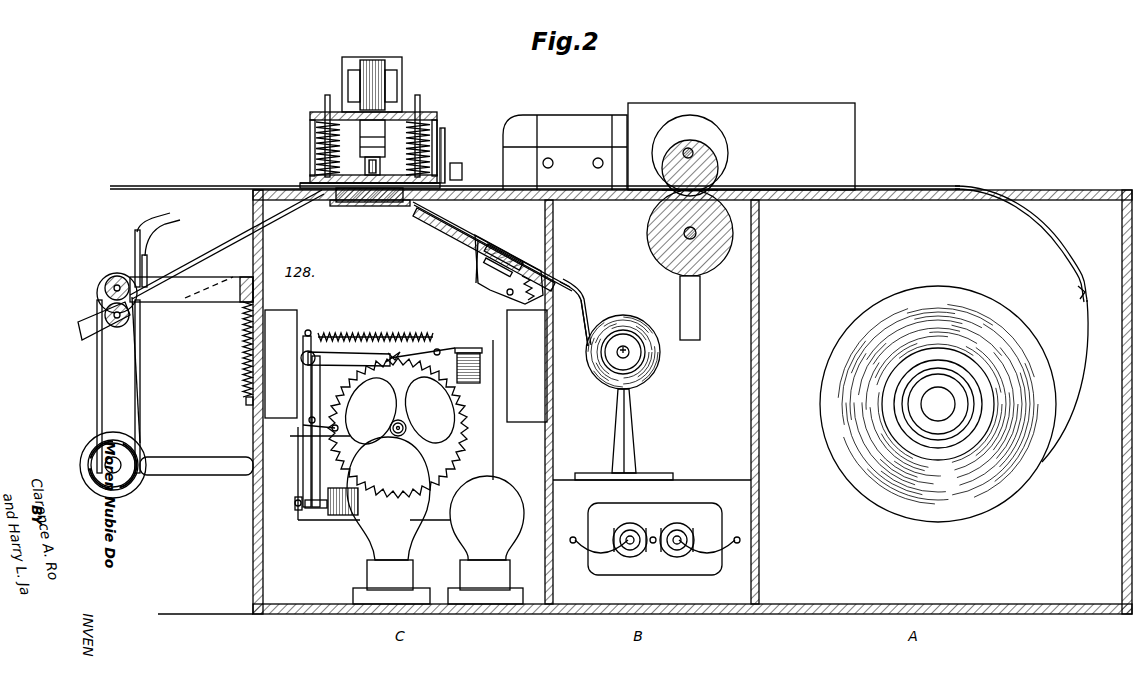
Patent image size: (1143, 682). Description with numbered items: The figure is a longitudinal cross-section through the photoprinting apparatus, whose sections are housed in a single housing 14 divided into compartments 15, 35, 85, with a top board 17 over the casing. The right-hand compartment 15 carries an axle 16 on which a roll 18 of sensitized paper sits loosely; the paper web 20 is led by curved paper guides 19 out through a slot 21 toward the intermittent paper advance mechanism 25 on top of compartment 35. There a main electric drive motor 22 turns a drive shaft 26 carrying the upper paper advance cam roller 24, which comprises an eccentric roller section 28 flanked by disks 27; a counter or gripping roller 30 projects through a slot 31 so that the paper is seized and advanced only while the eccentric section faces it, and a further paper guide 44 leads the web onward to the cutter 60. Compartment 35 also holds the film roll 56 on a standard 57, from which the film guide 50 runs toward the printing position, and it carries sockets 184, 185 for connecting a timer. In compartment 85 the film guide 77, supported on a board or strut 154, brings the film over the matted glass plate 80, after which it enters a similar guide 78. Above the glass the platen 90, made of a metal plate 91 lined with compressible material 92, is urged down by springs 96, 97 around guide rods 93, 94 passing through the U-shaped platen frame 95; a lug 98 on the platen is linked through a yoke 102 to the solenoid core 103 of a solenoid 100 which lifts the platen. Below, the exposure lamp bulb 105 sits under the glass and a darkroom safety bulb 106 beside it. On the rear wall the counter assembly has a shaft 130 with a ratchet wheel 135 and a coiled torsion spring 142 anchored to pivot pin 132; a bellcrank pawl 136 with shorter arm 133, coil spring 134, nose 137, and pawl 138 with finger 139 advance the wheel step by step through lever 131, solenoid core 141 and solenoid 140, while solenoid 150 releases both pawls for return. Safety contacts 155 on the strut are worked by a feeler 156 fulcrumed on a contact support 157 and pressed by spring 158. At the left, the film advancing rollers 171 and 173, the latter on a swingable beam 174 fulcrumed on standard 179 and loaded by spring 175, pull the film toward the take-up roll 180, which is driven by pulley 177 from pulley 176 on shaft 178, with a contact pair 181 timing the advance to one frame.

The housing 14 is at (1124, 473).
The compartment 15 is at (1066, 596).
The axle 16 is at (955, 402).
The top board 17 is at (783, 194).
The roll of sensitized paper 18 is at (913, 506).
The curved paper guides 19 is at (1054, 235).
The paper strip or web 20 is at (1088, 364).
The slot 21 is at (987, 193).
The main electric drive motor 22 is at (571, 124).
The upper paper advance cam roller 24 is at (736, 168).
The intermittent paper advance mechanism 25 is at (760, 98).
The drive shaft 26 is at (688, 150).
The disks 27 is at (710, 134).
The eccentric roller section 28 is at (716, 188).
The counter or gripping roller 30 is at (656, 249).
The slot 31 is at (672, 195).
The compartment 35 is at (752, 373).
The paper guide 44 is at (504, 186).
The film guide 50 is at (582, 298).
The film roll 56 is at (654, 374).
The standard 57 is at (629, 432).
The cutter 60 is at (463, 152).
The film guide 77 is at (480, 246).
The guide 78 is at (274, 216).
The glass plate 80 is at (372, 202).
The compartment 85 is at (538, 600).
The platen 90 is at (300, 179).
The metal plate 91 is at (317, 175).
The compressible lining 92 is at (310, 184).
The guide rod 93 is at (327, 98).
The guide rod 94 is at (421, 100).
The platen frame 95 is at (407, 112).
The spring 96 is at (320, 140).
The spring 97 is at (409, 137).
The lug 98 is at (376, 163).
The solenoid 100 is at (374, 62).
The yoke 102 is at (347, 201).
The solenoid core 103 is at (360, 128).
The lamp bulb 105 is at (377, 522).
The lamp bulb 106 is at (467, 527).
The shaft 130 is at (407, 424).
The two-armed lever 131 is at (316, 473).
The pivot pin 132 is at (310, 421).
The shorter arm 133 is at (310, 331).
The coil spring 134 is at (388, 344).
The ratchet wheel 135 is at (450, 452).
The pawl or dog 136 is at (339, 358).
The angular projection 137 is at (387, 349).
The pawl or dog 138 is at (446, 343).
The finger 139 is at (332, 431).
The solenoid 140 is at (347, 515).
The solenoid core 141 is at (325, 508).
The coiled torsion spring 142 is at (391, 425).
The solenoid 150 is at (487, 345).
The board or strut 154 is at (441, 217).
The safety contacts 155 is at (460, 272).
The feeler 156 is at (464, 245).
The contact support 157 is at (504, 293).
The spring 158 is at (562, 284).
The film advance roller 171 is at (114, 286).
The roller 173 is at (83, 338).
The swingable beam 174 is at (161, 305).
The spring 175 is at (243, 341).
The pulley 176 is at (97, 294).
The pulley 177 is at (82, 462).
The shaft 178 is at (106, 283).
The standard 179 is at (208, 299).
The take-up roll 180 is at (132, 479).
The contact pair 181 is at (131, 252).
The socket 184 is at (633, 528).
The socket 185 is at (682, 528).